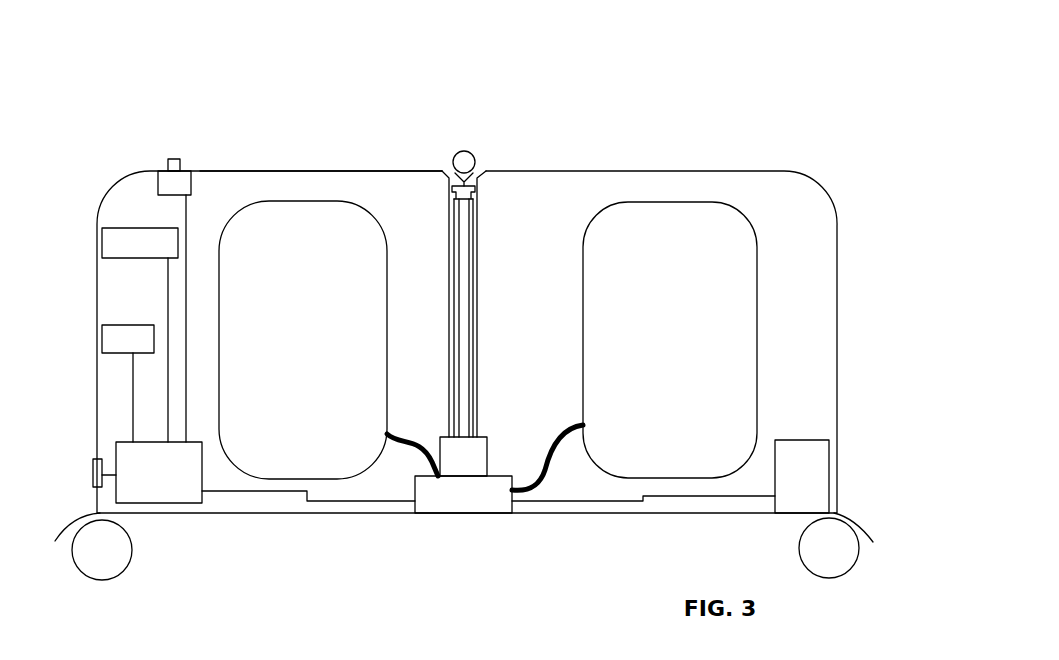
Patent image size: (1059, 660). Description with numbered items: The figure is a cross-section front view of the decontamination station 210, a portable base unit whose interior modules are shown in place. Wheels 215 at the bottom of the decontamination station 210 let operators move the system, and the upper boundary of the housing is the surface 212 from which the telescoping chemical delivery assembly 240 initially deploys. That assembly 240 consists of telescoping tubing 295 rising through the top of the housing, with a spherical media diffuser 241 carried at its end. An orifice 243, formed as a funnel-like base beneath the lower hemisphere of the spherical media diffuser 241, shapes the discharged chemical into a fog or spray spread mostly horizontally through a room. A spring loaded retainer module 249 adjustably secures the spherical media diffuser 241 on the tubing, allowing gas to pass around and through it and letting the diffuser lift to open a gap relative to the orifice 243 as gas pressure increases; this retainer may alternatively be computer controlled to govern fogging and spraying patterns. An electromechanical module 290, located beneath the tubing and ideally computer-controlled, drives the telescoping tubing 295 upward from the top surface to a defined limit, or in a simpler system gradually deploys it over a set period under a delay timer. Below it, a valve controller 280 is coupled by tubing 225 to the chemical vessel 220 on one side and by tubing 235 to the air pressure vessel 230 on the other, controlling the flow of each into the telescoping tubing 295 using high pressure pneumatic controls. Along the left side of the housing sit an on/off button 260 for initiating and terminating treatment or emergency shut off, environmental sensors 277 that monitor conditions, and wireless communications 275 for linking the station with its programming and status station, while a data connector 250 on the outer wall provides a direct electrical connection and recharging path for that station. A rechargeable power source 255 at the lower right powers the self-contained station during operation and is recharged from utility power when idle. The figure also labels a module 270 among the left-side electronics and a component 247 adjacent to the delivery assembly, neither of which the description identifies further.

The decontamination station 210 is at (792, 172).
The surface of the decontamination station 212 is at (333, 169).
The wheels 215 is at (113, 542).
The chemical vessel 220 is at (675, 215).
The tubing 225 is at (538, 483).
The air pressure vessel 230 is at (312, 213).
The tubing 235 is at (403, 452).
The telescoping chemical delivery assembly 240 is at (461, 140).
The spherical media diffuser 241 is at (453, 166).
The orifice 243 is at (479, 170).
The nozzle tube 247 is at (488, 170).
The spring loaded retainer module 249 is at (446, 186).
The data connector 250 is at (96, 470).
The rechargeable power source 255 is at (807, 447).
The on/off button 260 is at (168, 158).
The microprocessor 270 is at (120, 445).
The wireless communications 275 is at (113, 325).
The environmental sensors 277 is at (118, 228).
The valve controller 280 is at (440, 497).
The electromechanical module 290 is at (463, 463).
The telescoping tubing 295 is at (464, 300).